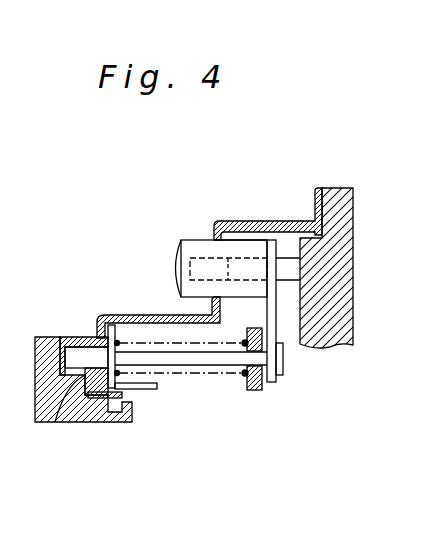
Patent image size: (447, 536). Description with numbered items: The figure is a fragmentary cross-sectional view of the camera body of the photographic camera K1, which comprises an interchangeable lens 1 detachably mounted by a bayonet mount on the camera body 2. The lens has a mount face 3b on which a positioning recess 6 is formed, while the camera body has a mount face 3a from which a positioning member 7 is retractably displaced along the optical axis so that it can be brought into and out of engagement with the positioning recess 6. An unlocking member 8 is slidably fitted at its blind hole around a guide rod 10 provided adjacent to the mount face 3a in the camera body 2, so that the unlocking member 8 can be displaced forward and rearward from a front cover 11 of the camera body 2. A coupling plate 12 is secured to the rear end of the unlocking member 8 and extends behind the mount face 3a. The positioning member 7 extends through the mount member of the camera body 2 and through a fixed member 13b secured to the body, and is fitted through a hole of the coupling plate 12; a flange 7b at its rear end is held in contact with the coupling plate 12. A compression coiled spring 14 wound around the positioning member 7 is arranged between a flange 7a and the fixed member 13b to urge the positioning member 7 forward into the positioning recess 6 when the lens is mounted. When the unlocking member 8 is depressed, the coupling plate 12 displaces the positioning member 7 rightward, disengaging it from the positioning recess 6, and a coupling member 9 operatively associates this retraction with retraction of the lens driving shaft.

The photographic camera K1 is at (121, 226).
The interchangeable lens 1 is at (82, 426).
The camera body 2 is at (280, 217).
The mount face 3a is at (52, 423).
The mount face 3b is at (102, 423).
The positioning recess 6 is at (62, 337).
The positioning member 7 is at (78, 337).
The flange 7a is at (127, 320).
The flange 7b is at (280, 377).
The unlocking member 8 is at (190, 241).
The coupling member 9 is at (150, 390).
The guide rod 10 is at (284, 262).
The front cover 11 is at (203, 239).
The coupling plate 12 is at (276, 330).
The fixed member 13b is at (255, 391).
The compression coiled spring 14 is at (198, 368).